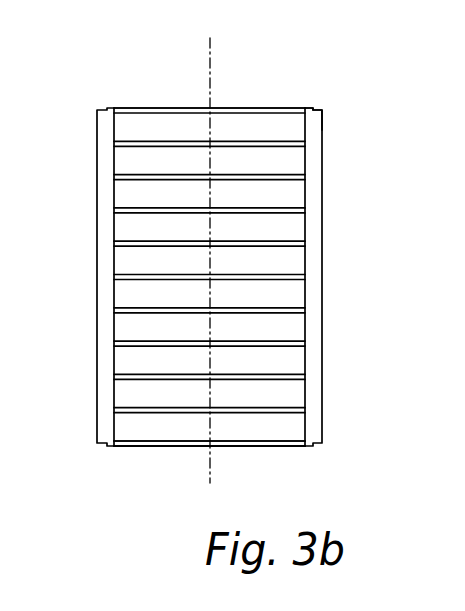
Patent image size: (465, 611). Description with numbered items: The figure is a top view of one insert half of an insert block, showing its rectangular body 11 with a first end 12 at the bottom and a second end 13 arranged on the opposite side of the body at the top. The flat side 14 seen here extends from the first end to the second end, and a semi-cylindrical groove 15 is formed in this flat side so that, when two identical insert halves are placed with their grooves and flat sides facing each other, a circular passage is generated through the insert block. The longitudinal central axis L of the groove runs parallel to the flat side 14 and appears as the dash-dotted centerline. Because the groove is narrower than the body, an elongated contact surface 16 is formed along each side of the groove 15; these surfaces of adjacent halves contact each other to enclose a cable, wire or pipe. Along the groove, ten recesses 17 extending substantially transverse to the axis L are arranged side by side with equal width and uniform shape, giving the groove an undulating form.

The rectangular body 11 is at (312, 247).
The first end 12 is at (143, 448).
The second end 13 is at (153, 107).
The flat side 14 is at (313, 120).
The semi-cylindrical groove 15 is at (260, 410).
The elongated contact surface 16 is at (110, 393).
The recess 17 is at (273, 162).
The longitudinal central axis L is at (210, 78).